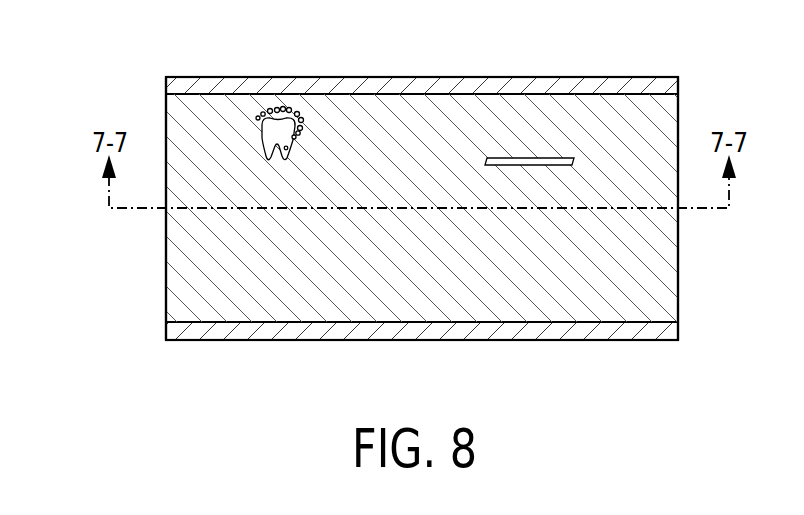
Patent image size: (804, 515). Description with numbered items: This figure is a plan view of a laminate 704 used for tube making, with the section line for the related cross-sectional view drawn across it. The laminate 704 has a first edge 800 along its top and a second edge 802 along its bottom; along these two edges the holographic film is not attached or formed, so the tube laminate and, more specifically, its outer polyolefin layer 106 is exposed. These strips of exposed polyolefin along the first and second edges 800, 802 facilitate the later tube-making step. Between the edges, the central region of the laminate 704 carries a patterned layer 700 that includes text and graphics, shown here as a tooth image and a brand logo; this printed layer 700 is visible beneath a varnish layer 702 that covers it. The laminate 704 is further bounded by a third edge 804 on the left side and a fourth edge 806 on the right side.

The laminate 704 is at (80, 66).
The outer polyolefin layer 106 is at (654, 87).
The first edge 800 is at (683, 78).
The second edge 802 is at (683, 323).
The varnish layer 702 is at (657, 261).
The patterned layer 700 is at (282, 120).
The third edge 804 is at (152, 290).
The fourth edge 806 is at (692, 310).